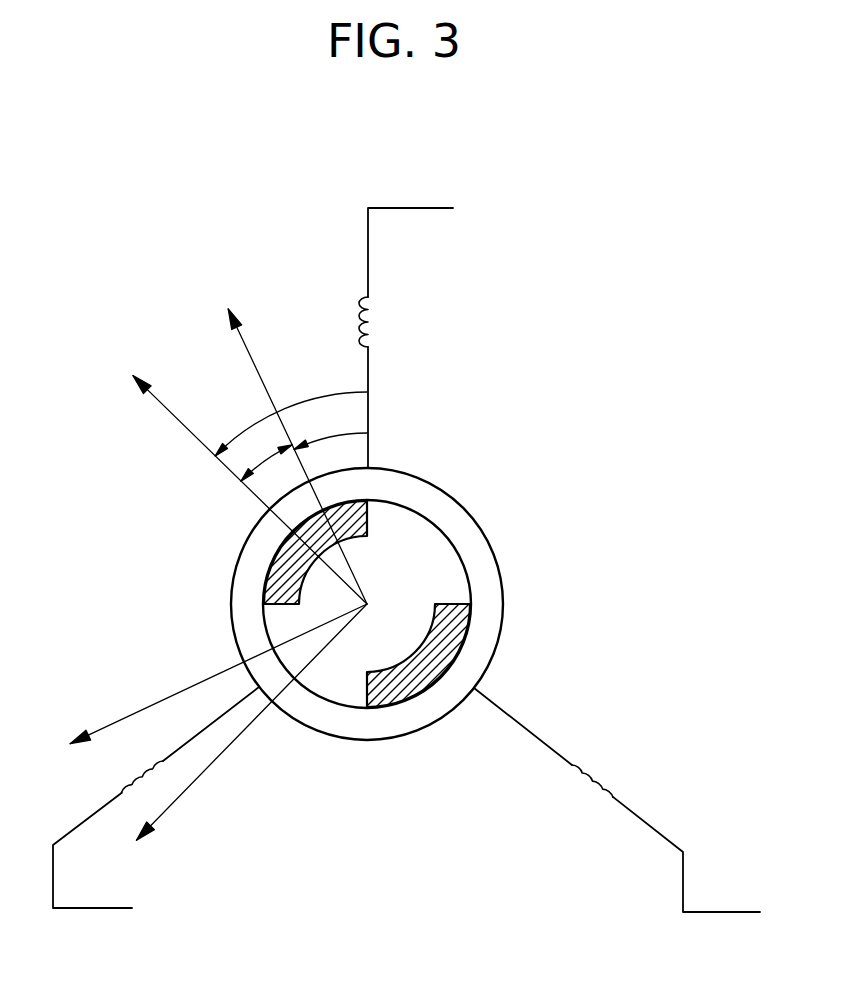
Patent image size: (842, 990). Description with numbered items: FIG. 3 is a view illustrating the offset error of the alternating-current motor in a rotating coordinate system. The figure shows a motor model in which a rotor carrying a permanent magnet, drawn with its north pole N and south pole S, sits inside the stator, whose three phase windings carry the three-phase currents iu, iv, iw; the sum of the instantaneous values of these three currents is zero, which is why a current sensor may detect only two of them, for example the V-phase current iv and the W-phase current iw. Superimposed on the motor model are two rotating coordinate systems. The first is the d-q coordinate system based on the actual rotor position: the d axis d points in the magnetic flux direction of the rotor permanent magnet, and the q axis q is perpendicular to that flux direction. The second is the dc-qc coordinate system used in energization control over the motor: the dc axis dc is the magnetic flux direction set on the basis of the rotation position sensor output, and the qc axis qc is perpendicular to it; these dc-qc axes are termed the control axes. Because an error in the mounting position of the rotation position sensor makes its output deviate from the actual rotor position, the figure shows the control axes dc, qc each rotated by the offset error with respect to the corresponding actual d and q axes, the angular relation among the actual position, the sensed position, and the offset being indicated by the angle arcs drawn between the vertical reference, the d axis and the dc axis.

The north pole permanent magnet N is at (310, 552).
The south pole permanent magnet S is at (418, 655).
The U-phase current iu is at (388, 297).
The V-phase current iv is at (140, 749).
The W-phase current iw is at (593, 751).
The d axis d is at (241, 480).
The dc axis dc is at (289, 442).
The q axis q is at (246, 731).
The qc axis qc is at (203, 682).